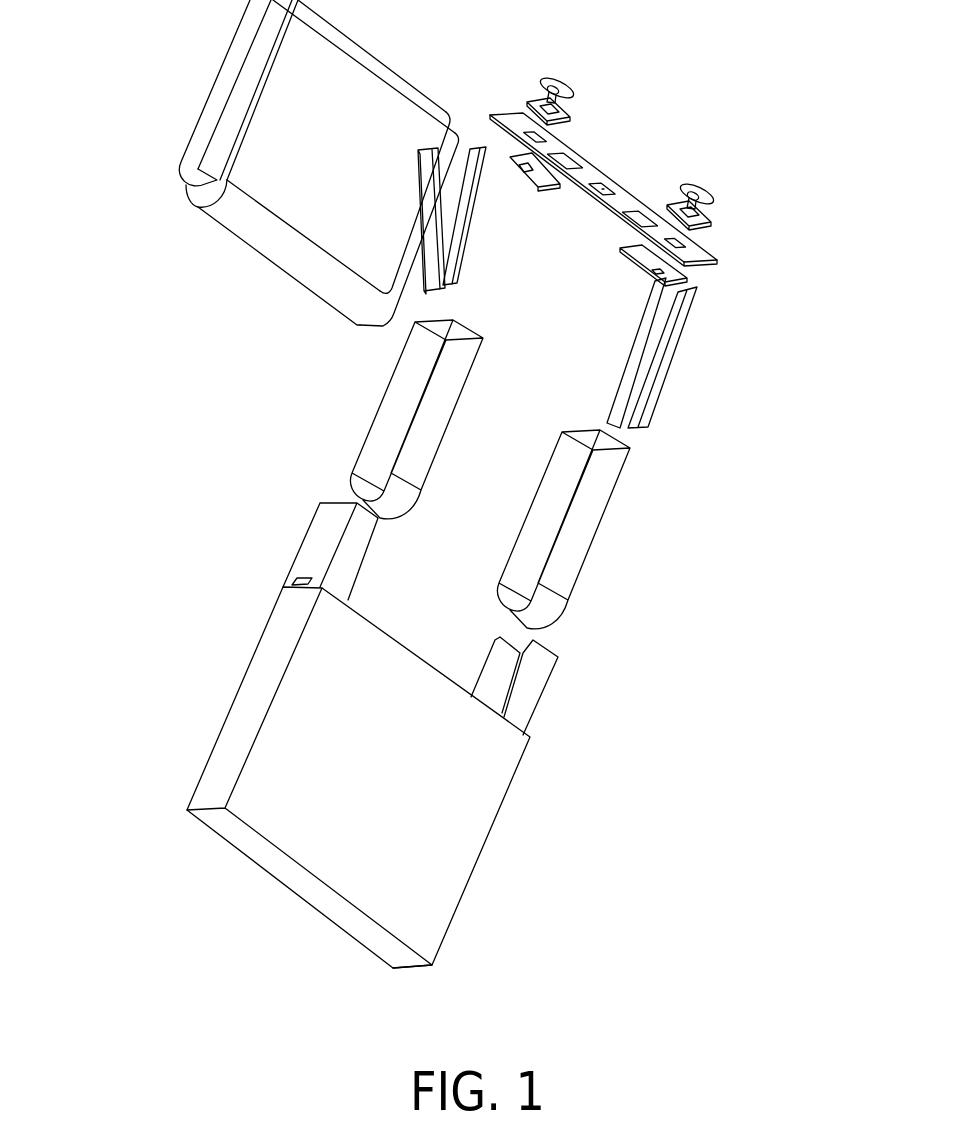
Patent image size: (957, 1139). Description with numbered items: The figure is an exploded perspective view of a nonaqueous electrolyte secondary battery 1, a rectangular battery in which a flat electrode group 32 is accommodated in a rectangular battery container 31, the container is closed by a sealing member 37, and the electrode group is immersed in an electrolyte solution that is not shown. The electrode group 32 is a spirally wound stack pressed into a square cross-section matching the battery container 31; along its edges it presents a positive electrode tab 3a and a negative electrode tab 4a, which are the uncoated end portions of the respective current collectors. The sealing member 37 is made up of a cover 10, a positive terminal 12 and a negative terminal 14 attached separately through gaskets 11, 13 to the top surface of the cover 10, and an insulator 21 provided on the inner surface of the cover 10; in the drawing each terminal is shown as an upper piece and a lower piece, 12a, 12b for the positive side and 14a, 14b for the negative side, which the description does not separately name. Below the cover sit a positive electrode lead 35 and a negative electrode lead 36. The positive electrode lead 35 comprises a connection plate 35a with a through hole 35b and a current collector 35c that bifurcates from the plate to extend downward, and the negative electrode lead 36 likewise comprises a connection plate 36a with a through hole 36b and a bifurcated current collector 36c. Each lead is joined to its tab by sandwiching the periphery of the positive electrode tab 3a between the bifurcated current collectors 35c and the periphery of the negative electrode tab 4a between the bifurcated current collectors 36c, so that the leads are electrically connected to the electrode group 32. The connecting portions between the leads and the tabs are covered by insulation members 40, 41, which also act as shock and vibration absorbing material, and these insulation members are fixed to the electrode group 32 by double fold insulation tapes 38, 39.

The nonaqueous electrolyte secondary battery 1 is at (118, 359).
The positive electrode tab 3a is at (225, 67).
The negative electrode tab 4a is at (457, 147).
The cover 10 is at (616, 177).
The gasket 11 is at (530, 103).
The positive terminal 12 is at (640, 62).
The rivet head 12a is at (566, 84).
The washer 12b is at (566, 109).
The gasket 13 is at (695, 222).
The negative terminal 14 is at (780, 167).
The rivet head 14a is at (706, 190).
The washer 14b is at (704, 211).
The insulator 21 is at (578, 196).
The battery container 31 is at (468, 845).
The electrode group 32 is at (350, 80).
The positive electrode lead 35 is at (509, 240).
The connection plate 35a is at (520, 168).
The through hole 35b is at (487, 190).
The current collector 35c is at (440, 285).
The negative electrode lead 36 is at (766, 300).
The connection plate 36a is at (680, 272).
The through hole 36b is at (650, 352).
The current collector 36c is at (657, 373).
The sealing member 37 is at (832, 50).
The double fold insulation tape 38 is at (390, 415).
The double fold insulation tape 39 is at (583, 520).
The insulation member 40 is at (315, 547).
The insulation member 41 is at (535, 692).